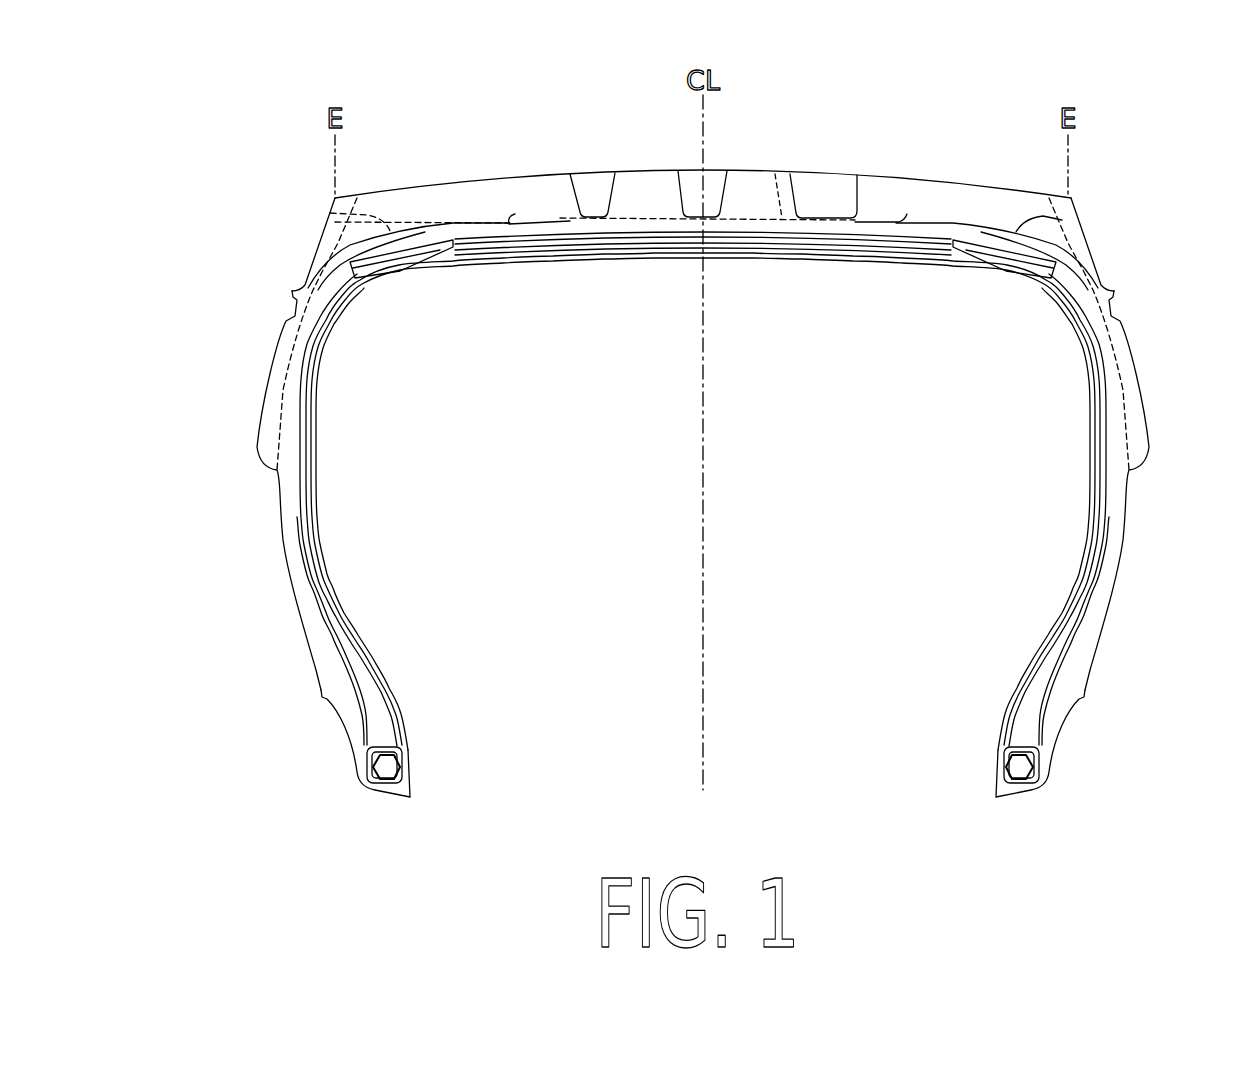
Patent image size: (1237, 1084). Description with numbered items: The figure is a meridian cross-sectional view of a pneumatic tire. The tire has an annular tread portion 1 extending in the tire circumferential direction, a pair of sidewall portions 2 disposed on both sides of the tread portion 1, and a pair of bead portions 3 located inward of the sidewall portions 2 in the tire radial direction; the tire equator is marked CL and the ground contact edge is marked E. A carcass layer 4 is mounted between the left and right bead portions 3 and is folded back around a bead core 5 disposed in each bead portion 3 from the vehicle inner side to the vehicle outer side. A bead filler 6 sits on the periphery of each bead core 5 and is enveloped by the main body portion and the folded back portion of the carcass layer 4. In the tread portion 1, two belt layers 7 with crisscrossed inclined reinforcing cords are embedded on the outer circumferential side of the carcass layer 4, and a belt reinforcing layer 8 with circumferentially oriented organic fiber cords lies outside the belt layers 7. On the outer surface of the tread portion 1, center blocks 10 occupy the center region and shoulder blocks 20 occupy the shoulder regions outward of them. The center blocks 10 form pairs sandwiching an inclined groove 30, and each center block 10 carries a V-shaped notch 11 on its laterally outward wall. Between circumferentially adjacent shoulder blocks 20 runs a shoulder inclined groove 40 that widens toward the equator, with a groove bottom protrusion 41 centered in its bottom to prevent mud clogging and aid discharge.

The tread portion 1 is at (800, 140).
The sidewall portion 2 is at (265, 494).
The bead portion 3 is at (347, 768).
The carcass layer 4 is at (1044, 291).
The bead core 5 is at (393, 767).
The bead filler 6 is at (372, 690).
The belt layer 7 is at (824, 245).
The belt reinforcing layer 8 is at (961, 248).
The center block 10 is at (659, 176).
The notch 11 is at (601, 203).
The shoulder block 20 is at (460, 186).
The inclined groove 30 is at (714, 182).
The shoulder inclined groove 40 is at (524, 220).
The groove bottom protrusion 41 is at (330, 213).